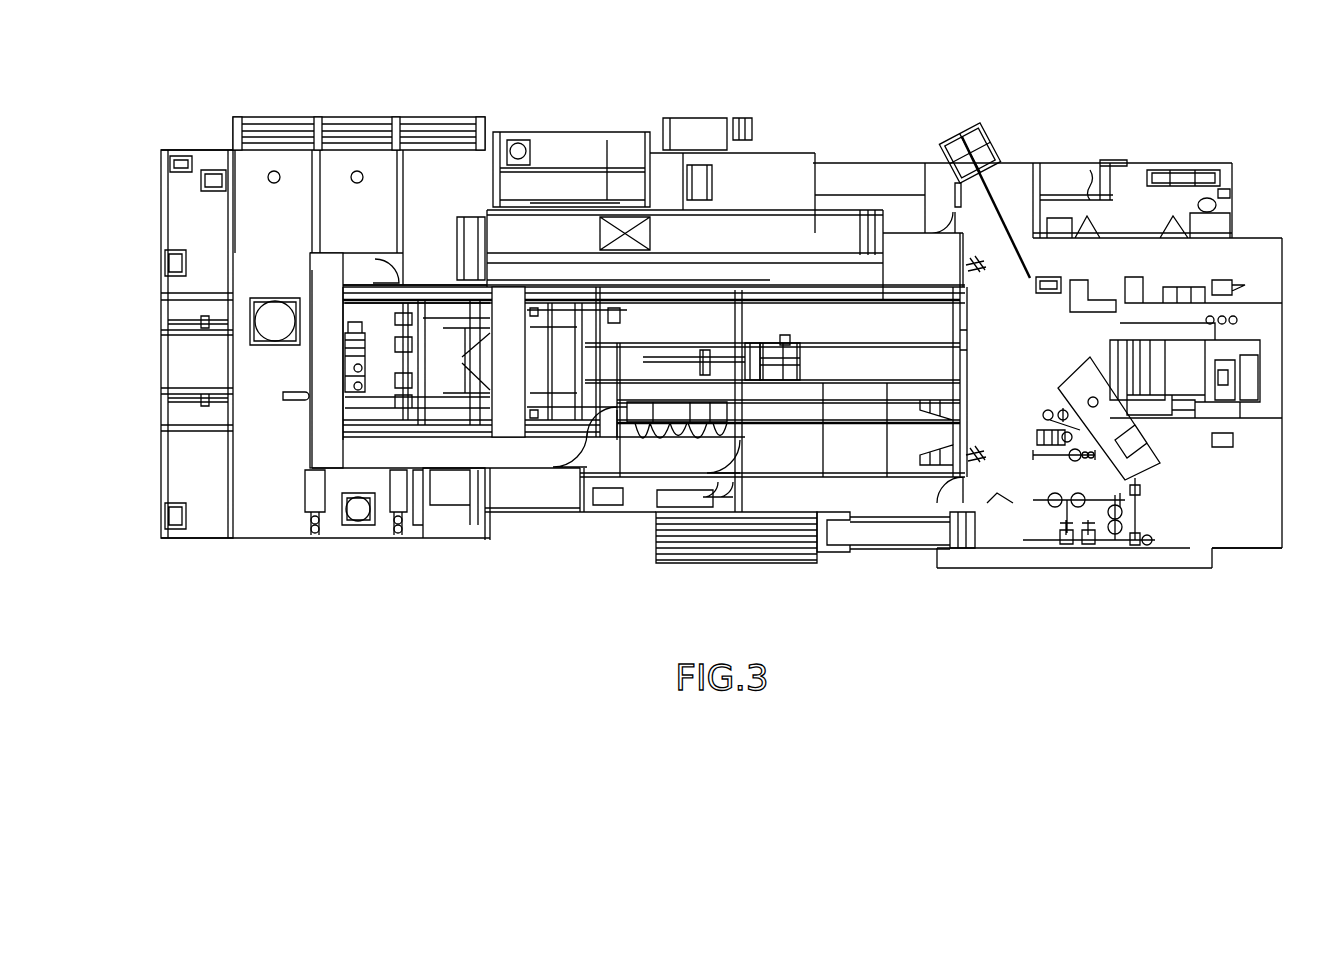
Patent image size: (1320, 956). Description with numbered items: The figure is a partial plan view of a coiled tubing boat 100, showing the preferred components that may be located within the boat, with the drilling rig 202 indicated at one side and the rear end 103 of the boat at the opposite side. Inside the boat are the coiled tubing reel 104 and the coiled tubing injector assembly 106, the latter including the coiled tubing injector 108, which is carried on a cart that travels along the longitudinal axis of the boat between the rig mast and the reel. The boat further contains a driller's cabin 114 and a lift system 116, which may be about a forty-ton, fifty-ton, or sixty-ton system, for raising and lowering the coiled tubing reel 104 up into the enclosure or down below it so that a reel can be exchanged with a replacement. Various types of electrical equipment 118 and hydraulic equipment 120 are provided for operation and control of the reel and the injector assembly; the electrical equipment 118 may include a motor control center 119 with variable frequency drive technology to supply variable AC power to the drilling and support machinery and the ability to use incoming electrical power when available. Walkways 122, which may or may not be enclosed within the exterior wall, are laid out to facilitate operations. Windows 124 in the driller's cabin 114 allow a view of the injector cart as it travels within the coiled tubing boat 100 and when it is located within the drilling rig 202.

The coiled tubing boat 100 is at (583, 518).
The rear end 103 is at (310, 273).
The coiled tubing reel 104 is at (545, 330).
The coiled tubing injector assembly 106 is at (777, 334).
The coiled tubing injector 108 is at (792, 340).
The driller's cabin 114 is at (867, 450).
The lift system 116 is at (510, 440).
The electrical equipment 118 is at (648, 447).
The motor control center 119 is at (681, 432).
The hydraulic equipment 120 is at (350, 388).
The walkways 122 is at (325, 357).
The windows 124 is at (910, 380).
The drilling rig 202 is at (1190, 148).